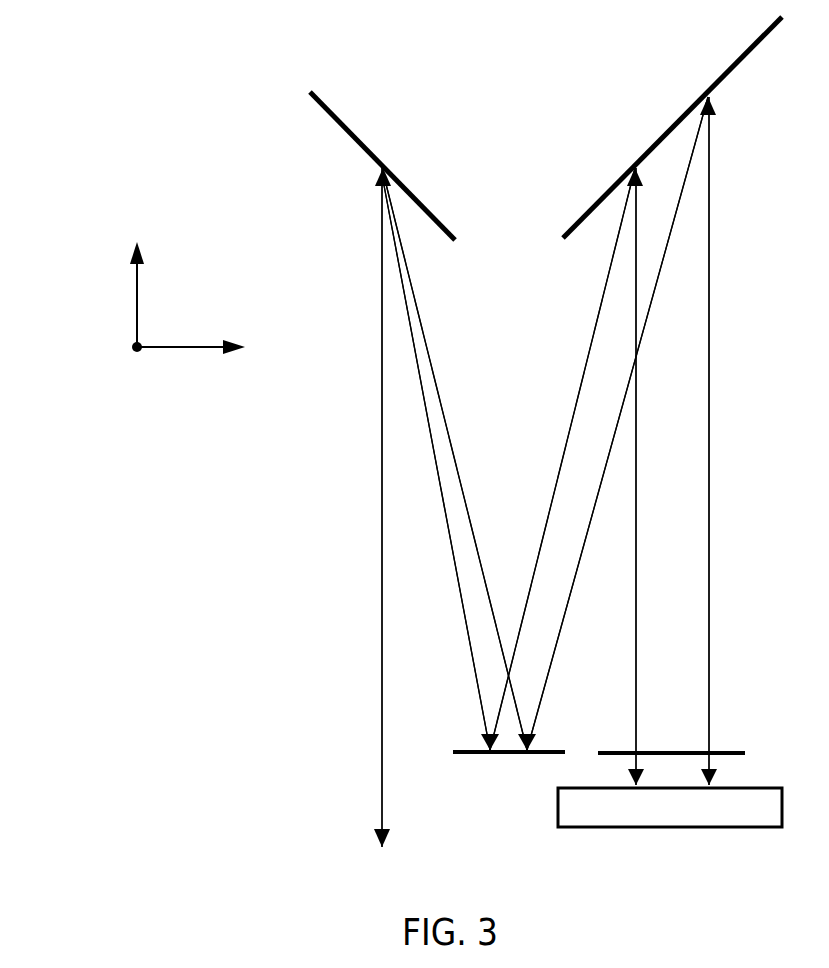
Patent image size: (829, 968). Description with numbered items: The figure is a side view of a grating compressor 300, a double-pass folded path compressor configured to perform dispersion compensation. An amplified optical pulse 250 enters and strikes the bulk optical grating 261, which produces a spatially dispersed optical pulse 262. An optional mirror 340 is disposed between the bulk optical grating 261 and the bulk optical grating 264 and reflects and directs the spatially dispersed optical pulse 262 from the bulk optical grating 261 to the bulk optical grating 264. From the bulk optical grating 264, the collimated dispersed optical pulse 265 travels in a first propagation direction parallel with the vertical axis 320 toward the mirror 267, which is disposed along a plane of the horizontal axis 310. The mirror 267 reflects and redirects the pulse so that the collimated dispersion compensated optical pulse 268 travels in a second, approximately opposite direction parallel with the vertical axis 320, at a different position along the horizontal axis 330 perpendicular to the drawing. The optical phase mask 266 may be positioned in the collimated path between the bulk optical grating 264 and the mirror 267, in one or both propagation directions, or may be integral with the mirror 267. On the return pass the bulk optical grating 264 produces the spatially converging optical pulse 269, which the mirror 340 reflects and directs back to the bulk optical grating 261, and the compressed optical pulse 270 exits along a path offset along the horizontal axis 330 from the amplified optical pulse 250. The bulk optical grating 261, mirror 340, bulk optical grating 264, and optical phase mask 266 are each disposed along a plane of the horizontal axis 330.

The grating compressor 300 is at (50, 73).
The bulk optical grating 261 is at (355, 135).
The bulk optical grating 264 is at (740, 55).
The mirror 340 is at (467, 750).
The optical phase mask 266 is at (735, 748).
The mirror 267 is at (690, 819).
The compressed optical pulse 270 is at (380, 573).
The amplified optical pulse 250 is at (380, 670).
The spatially dispersed optical pulse 262 is at (475, 555).
The spatially converging optical pulse 269 is at (501, 648).
The collimated dispersed optical pulse 265 is at (637, 368).
The collimated dispersion compensated optical pulse 268 is at (637, 680).
The horizontal axis 310 is at (185, 348).
The vertical axis 320 is at (137, 287).
The horizontal axis 330 is at (137, 355).